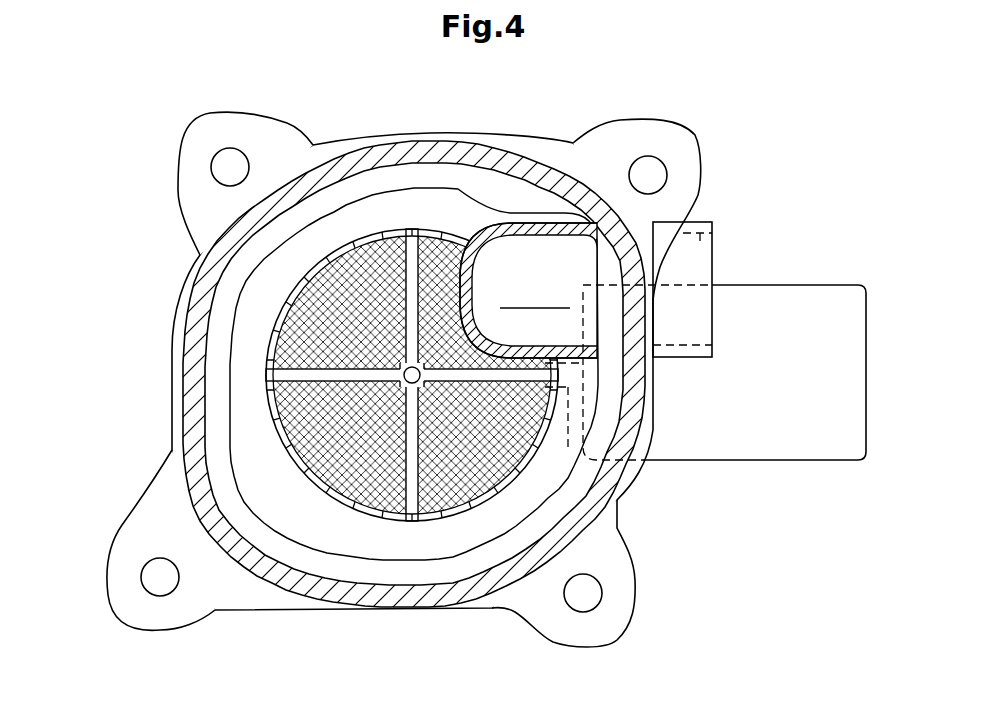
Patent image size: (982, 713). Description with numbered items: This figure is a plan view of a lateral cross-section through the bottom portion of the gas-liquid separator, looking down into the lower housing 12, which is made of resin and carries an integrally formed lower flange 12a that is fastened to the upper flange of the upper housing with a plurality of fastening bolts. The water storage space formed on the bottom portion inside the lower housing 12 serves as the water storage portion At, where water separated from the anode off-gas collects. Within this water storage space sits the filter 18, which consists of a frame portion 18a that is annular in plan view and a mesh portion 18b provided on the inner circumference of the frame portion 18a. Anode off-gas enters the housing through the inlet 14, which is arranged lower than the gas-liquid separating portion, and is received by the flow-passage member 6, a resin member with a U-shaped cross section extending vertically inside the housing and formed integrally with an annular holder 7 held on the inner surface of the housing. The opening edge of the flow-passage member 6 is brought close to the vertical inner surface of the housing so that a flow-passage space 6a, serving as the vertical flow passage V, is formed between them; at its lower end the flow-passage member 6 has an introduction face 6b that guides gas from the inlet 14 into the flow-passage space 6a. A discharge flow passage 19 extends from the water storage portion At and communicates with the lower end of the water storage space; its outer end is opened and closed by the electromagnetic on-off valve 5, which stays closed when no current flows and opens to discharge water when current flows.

The electromagnetic on-off valve 5 is at (828, 452).
The flow-passage member 6 is at (523, 218).
The flow-passage space 6a is at (535, 294).
The introduction face 6b is at (543, 260).
The annular holder 7 is at (479, 188).
The lower housing 12 is at (417, 136).
The lower flange 12a is at (178, 177).
The inlet 14 is at (712, 248).
The filter 18 is at (330, 364).
The frame portion 18a is at (283, 302).
The mesh portion 18b is at (328, 460).
The discharge flow passage 19 is at (588, 460).
The water storage portion At is at (243, 425).